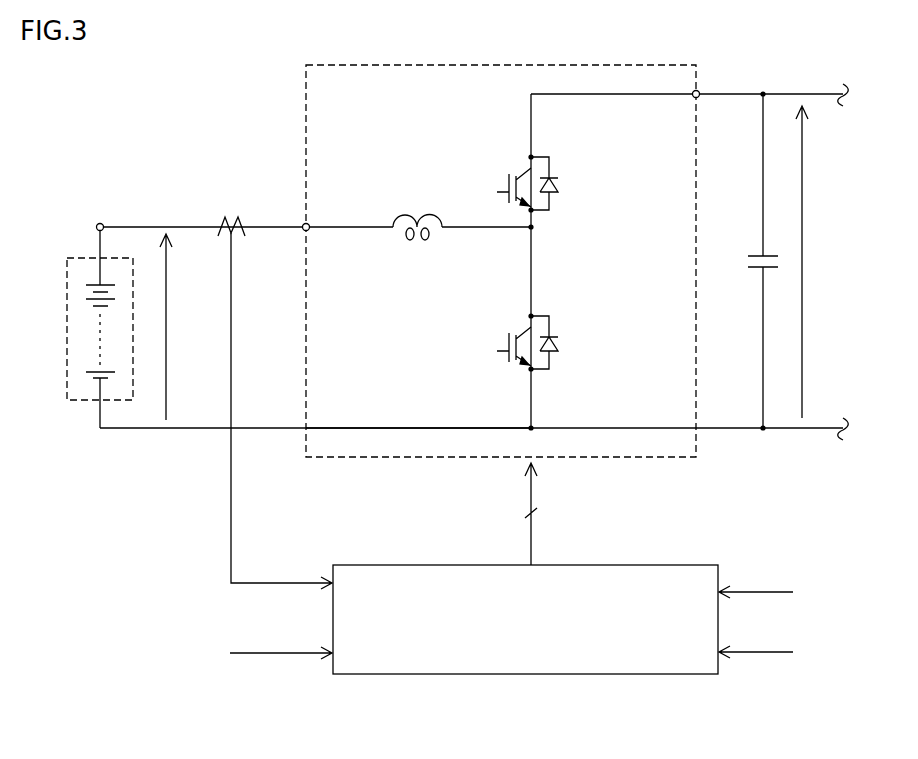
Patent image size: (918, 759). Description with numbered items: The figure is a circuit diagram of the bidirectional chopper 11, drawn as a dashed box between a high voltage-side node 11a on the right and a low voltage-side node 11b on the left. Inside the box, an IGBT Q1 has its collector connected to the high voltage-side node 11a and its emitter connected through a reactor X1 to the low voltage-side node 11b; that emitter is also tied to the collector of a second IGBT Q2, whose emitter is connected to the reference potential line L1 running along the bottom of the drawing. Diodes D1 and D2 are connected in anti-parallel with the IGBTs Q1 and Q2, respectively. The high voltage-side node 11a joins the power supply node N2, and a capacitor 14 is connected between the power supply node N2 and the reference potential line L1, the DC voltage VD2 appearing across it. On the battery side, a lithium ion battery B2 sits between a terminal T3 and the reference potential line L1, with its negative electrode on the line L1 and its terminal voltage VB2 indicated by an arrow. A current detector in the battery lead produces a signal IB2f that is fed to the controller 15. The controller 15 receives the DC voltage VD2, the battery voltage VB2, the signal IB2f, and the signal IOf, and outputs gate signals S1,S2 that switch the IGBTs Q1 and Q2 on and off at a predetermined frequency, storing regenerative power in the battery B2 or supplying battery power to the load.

The bidirectional chopper 11 is at (650, 66).
The high voltage-side node 11a is at (699, 92).
The low voltage-side node 11b is at (303, 224).
The capacitor 14 is at (748, 256).
The controller 15 is at (668, 564).
The lithium ion battery B2 is at (82, 257).
The terminal T3 is at (97, 224).
The reactor X1 is at (418, 221).
The IGBT Q1 is at (498, 191).
The IGBT Q2 is at (498, 350).
The diode D1 is at (560, 186).
The diode D2 is at (560, 345).
The power supply node N2 is at (766, 92).
The reference potential line L1 is at (427, 430).
The voltage between the terminals of lithium ion battery VB2 is at (246, 449).
The DC voltage of power supply node VD2 is at (781, 385).
The output signal of current detector IB2f is at (231, 505).
The gate signals S1,S2 is at (559, 514).
The output signal of current detector IOf is at (770, 594).